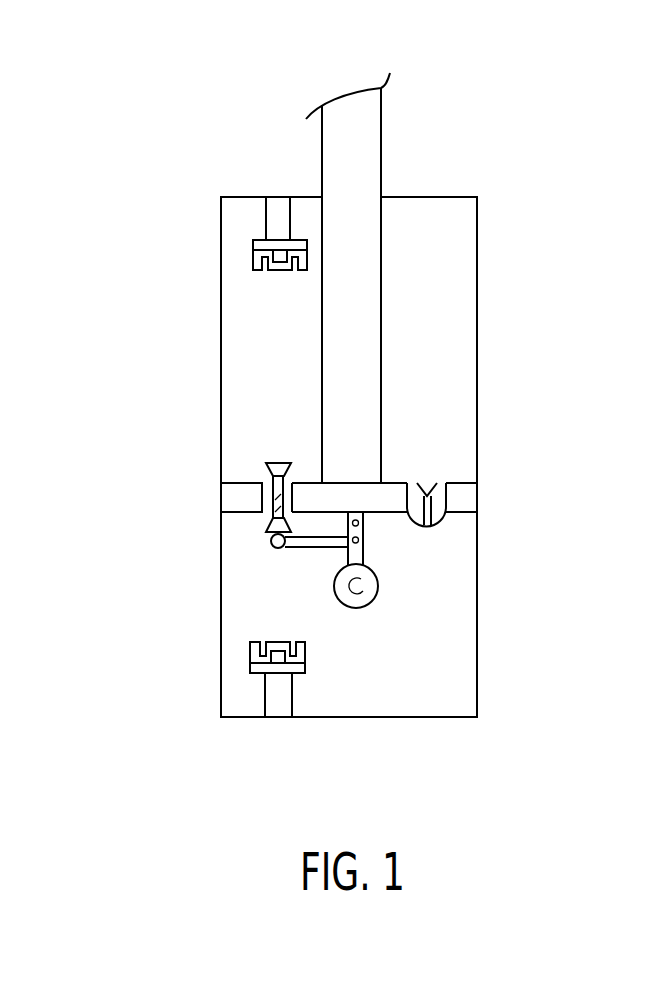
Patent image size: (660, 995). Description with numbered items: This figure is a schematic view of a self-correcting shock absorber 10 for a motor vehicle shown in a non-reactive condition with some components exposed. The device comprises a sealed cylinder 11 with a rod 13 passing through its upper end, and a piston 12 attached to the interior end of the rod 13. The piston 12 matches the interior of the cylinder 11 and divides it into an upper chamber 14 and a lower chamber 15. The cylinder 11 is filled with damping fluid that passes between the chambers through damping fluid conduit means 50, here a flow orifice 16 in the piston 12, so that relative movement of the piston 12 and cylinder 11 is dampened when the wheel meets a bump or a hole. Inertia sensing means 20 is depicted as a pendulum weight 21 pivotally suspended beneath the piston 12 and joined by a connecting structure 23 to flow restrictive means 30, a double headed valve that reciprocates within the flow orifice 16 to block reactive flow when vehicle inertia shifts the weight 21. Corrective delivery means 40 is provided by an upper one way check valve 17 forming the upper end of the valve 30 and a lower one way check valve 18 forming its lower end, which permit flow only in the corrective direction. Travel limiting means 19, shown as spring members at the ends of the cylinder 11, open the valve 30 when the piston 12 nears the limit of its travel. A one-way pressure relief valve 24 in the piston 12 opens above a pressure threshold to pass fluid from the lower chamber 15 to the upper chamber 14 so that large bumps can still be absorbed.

The self-correcting shock absorber device 10 is at (531, 86).
The sealed cylinder 11 is at (477, 237).
The piston 12 is at (462, 502).
The rod 13 is at (412, 110).
The upper chamber 14 is at (457, 355).
The lower chamber 15 is at (449, 673).
The flow orifice 16 is at (262, 482).
The upper one way check valve 17 is at (277, 462).
The lower one way check valve 18 is at (270, 538).
The travel limiting means 19 is at (278, 208).
The inertia sensing means 20 is at (379, 660).
The pendulum weight 21 is at (365, 586).
The connecting structure 23 is at (300, 548).
The one-way pressure relief valve 24 is at (433, 483).
The flow restrictive means 30 is at (270, 522).
The corrective delivery means 40 is at (255, 430).
The damping fluid conduit means 50 is at (245, 458).